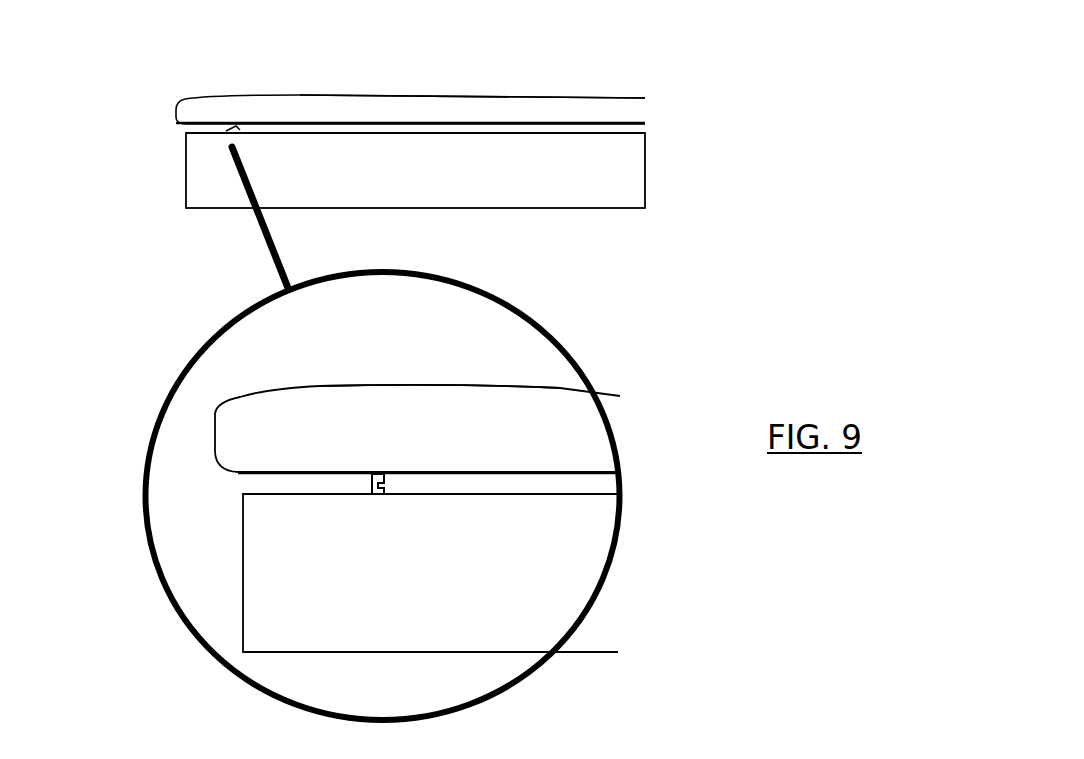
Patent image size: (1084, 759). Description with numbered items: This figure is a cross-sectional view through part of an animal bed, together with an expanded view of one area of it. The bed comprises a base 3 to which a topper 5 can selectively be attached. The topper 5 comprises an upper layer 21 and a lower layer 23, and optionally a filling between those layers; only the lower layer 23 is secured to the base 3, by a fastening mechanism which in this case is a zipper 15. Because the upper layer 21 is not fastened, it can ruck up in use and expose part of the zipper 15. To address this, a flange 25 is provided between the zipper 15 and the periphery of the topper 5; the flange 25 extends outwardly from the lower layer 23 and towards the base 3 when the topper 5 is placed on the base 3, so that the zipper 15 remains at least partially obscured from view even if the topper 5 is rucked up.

The base 3 is at (410, 418).
The topper 5 is at (403, 243).
The zipper 15 is at (406, 495).
The upper layer 21 is at (300, 94).
The lower layer 23 is at (382, 126).
The flange 25 is at (367, 478).